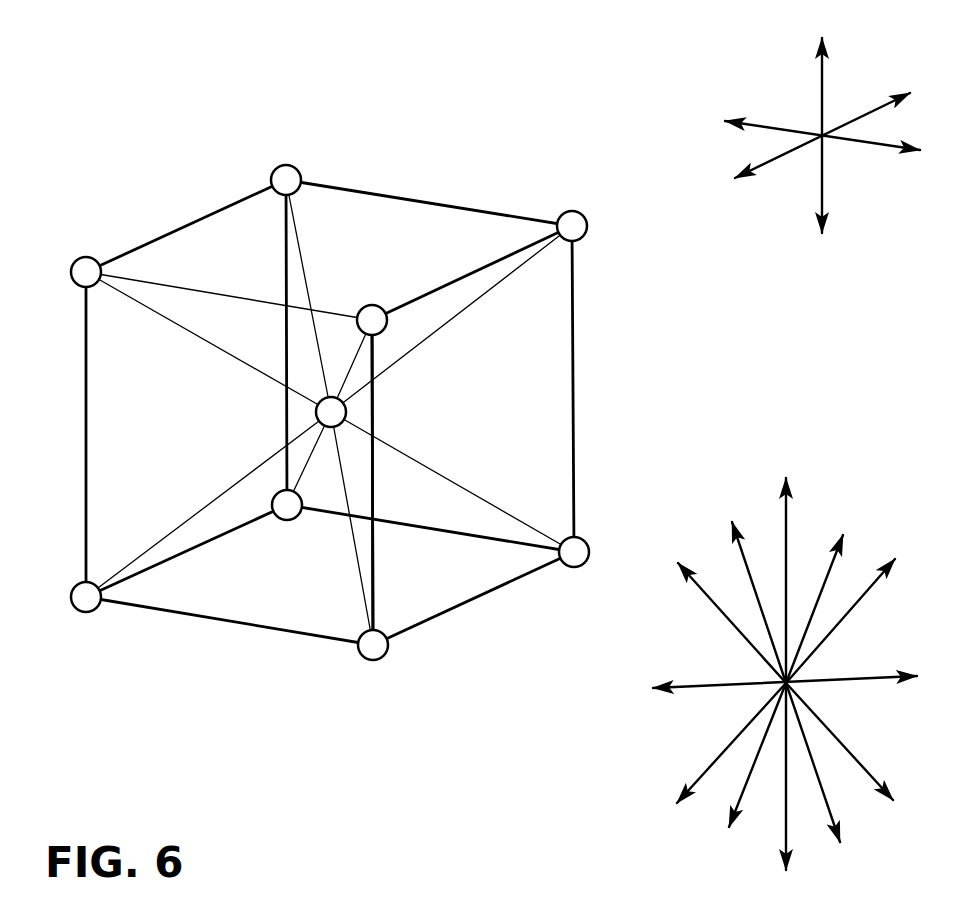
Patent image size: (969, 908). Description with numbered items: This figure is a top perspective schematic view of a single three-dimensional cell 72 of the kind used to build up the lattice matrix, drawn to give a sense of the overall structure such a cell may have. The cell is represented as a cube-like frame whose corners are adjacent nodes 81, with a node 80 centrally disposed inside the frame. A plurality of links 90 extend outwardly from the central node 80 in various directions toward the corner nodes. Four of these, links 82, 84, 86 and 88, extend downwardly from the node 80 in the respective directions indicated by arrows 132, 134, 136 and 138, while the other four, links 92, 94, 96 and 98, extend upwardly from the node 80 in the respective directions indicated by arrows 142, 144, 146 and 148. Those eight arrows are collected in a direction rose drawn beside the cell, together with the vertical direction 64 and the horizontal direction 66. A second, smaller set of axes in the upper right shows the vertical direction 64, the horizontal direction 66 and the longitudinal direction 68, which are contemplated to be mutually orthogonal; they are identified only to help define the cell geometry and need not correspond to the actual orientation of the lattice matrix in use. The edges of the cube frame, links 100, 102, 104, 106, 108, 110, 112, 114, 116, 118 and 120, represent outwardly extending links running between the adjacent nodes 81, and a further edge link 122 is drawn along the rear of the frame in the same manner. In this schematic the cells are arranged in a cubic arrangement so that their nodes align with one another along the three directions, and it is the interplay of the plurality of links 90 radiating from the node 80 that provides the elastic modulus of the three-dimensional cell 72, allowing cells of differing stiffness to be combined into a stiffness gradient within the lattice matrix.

The vertical direction 64 is at (822, 77).
The horizontal direction 66 is at (770, 125).
The longitudinal direction 68 is at (867, 108).
The 3D cell 72 is at (103, 168).
The node 80 is at (312, 413).
The adjacent nodes 81 is at (273, 158).
The link 82 is at (167, 537).
The link 84 is at (357, 570).
The link 86 is at (497, 510).
The link 88 is at (307, 475).
The plurality of links 90 is at (455, 418).
The link 92 is at (505, 273).
The link 94 is at (298, 240).
The link 96 is at (170, 317).
The link 98 is at (350, 350).
The link 100 is at (115, 252).
The link 102 is at (82, 323).
The link 104 is at (140, 607).
The link 106 is at (450, 610).
The link 108 is at (577, 385).
The link 110 is at (346, 300).
The link 112 is at (282, 258).
The link 114 is at (210, 540).
The link 116 is at (440, 527).
The link 118 is at (212, 292).
The link 120 is at (452, 280).
The rear lower edge 122 is at (375, 497).
The arrow 132 is at (710, 768).
The arrow 134 is at (827, 800).
The arrow 136 is at (835, 737).
The arrow 138 is at (743, 793).
The arrow 142 is at (858, 592).
The arrow 144 is at (745, 553).
The arrow 146 is at (703, 583).
The arrow 148 is at (823, 572).